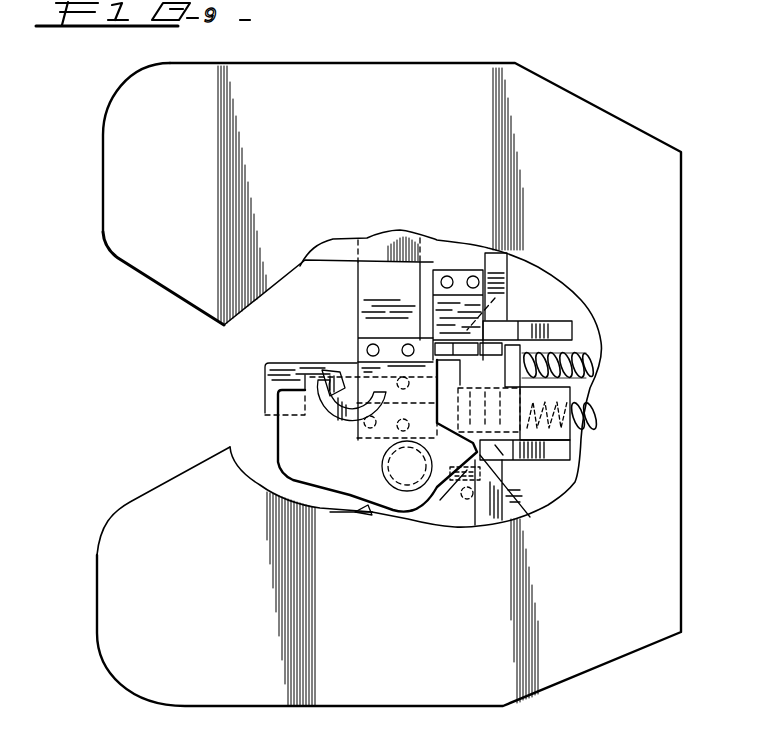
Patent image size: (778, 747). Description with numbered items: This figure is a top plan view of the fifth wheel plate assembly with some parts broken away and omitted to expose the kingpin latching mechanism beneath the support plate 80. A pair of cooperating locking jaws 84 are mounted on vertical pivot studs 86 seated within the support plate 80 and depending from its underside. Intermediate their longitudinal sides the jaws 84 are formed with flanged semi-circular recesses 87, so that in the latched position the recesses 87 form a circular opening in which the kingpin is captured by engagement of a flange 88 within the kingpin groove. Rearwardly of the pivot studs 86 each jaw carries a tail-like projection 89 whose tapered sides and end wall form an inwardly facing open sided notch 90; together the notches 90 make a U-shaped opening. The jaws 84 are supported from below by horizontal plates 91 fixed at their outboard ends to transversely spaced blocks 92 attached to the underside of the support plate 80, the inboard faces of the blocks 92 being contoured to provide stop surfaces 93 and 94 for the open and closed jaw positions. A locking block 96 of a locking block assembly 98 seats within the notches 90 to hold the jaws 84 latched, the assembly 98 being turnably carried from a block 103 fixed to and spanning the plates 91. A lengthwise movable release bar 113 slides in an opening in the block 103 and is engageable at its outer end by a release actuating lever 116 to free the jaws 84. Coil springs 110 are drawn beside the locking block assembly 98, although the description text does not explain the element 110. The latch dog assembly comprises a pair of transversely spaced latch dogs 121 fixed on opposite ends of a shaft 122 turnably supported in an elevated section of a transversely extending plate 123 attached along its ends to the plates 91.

The support plate 80 is at (117, 208).
The locking jaws 84 is at (287, 433).
The pivot studs 86 is at (408, 477).
The flanged semi-circular recesses 87 is at (333, 423).
The flange 88 is at (307, 372).
The tail-like projections 89 is at (510, 497).
The open sided notch 90 is at (353, 507).
The horizontal plates 91 is at (365, 284).
The blocks 92 is at (388, 246).
The stop surface 93 is at (360, 512).
The stop surface 94 is at (469, 475).
The locking block 96 is at (561, 435).
The locking block assembly 98 is at (561, 456).
The block 103 is at (366, 355).
The spring 110 is at (587, 372).
The release bar 113 is at (337, 370).
The release actuating lever 116 is at (267, 382).
The latch dogs 121 is at (490, 348).
The shaft 122 is at (497, 300).
The transversely extending plate 123 is at (455, 303).